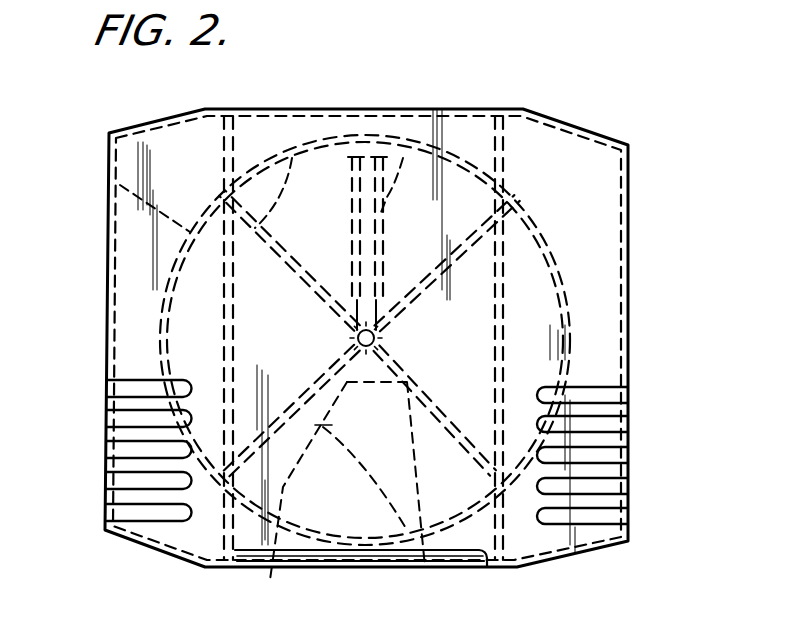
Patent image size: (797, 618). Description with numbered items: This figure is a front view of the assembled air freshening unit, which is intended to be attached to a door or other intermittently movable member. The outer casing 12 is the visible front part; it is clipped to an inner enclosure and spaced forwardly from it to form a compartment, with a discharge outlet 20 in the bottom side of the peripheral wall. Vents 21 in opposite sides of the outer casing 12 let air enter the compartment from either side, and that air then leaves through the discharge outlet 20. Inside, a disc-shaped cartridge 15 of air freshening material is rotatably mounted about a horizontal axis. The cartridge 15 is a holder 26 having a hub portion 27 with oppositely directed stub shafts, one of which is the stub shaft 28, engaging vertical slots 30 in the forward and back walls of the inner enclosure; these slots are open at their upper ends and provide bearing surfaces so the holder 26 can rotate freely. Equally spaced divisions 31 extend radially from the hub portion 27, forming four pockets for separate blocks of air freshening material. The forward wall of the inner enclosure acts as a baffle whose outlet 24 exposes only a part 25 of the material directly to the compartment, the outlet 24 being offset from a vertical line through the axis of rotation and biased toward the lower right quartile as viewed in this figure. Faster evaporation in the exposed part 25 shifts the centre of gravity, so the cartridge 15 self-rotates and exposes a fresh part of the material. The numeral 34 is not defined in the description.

The outer casing 12 is at (108, 237).
The cartridge 15 is at (158, 323).
The discharge outlet 20 is at (327, 568).
The vents 21 is at (118, 481).
The outlet 24 is at (426, 568).
The exposed part 25 is at (277, 570).
The holder 26 is at (120, 185).
The hub portion 27 is at (378, 340).
The stub shaft 28 is at (380, 336).
The vertical slots 30 is at (403, 158).
The divisions 31 is at (292, 158).
The support 34 is at (316, 180).